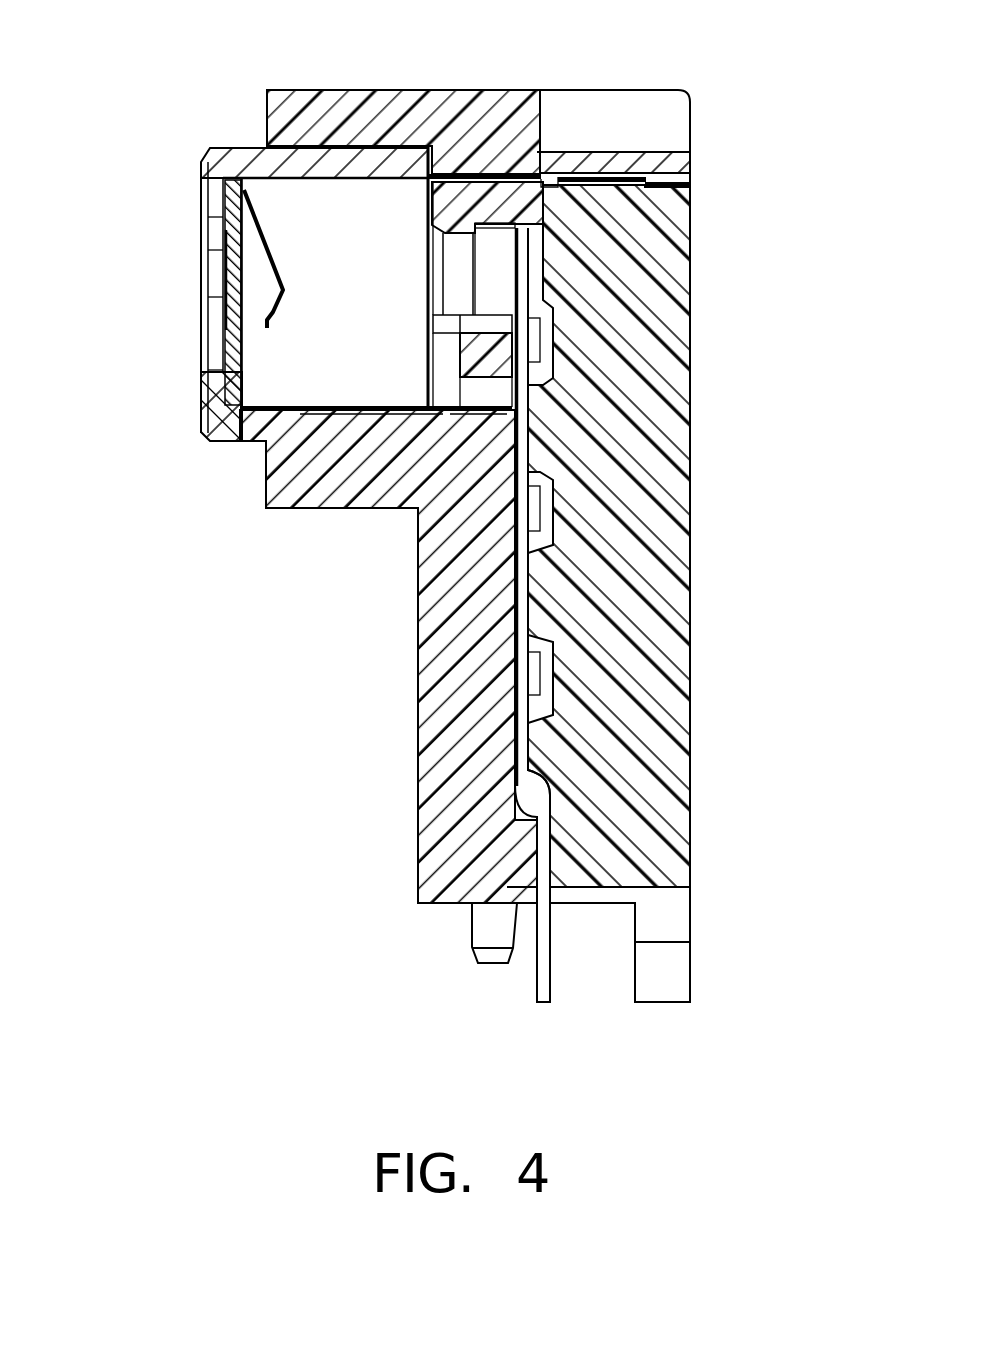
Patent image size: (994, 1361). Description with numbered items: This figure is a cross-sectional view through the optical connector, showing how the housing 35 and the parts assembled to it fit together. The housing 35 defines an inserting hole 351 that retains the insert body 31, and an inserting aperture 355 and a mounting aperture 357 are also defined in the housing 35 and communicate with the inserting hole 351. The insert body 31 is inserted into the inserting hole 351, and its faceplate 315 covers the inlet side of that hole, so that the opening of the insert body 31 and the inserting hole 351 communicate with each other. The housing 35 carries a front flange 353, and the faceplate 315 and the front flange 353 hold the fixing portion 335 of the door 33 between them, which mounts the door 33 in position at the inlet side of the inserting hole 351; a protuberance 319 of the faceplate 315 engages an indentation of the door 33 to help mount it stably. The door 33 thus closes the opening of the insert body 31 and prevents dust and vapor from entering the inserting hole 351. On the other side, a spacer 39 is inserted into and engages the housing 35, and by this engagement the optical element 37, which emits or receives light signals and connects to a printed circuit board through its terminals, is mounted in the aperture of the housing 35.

The insert body 31 is at (224, 144).
The faceplate 315 is at (212, 385).
The fixing portion 335 is at (200, 427).
The protuberance 319 is at (197, 442).
The door 33 is at (252, 359).
The housing 35 is at (495, 92).
The inserting hole 351 is at (447, 172).
The inserting aperture 355 is at (453, 263).
The front flange 353 is at (268, 430).
The optical element 37 is at (525, 259).
The spacer 39 is at (695, 468).
The mounting aperture 357 is at (537, 152).